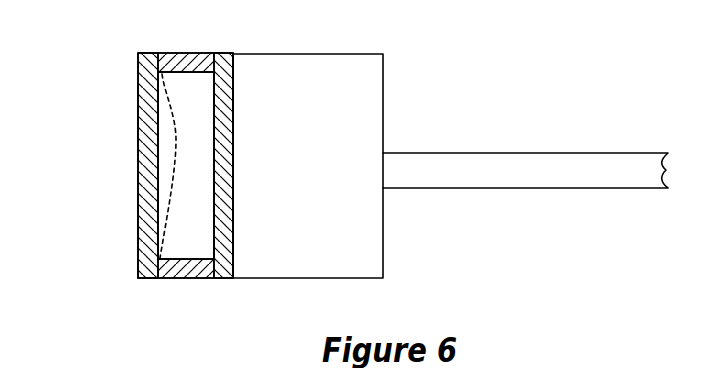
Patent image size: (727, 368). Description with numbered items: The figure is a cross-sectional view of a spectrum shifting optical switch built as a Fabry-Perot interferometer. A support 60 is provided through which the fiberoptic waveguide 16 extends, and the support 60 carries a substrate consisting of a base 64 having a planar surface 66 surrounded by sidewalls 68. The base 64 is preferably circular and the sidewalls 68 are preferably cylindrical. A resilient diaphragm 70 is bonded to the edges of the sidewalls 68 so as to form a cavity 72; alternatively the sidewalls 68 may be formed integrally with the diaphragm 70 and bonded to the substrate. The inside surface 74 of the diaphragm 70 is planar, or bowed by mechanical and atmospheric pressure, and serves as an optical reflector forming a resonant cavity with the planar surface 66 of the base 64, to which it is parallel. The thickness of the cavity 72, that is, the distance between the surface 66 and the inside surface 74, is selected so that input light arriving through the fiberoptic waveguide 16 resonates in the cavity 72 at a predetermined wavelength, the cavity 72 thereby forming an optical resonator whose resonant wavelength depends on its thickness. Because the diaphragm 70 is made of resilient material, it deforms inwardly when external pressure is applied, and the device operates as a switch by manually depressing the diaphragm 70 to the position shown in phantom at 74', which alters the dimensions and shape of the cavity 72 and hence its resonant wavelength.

The fiberoptic waveguide 16 is at (467, 153).
The support 60 is at (303, 277).
The base 64 is at (216, 110).
The planar surface 66 is at (213, 199).
The sidewalls 68 is at (190, 53).
The resilient diaphragm 70 is at (138, 185).
The cavity 72 is at (204, 158).
The inside surface of the diaphragm 74 is at (125, 165).
The depressed position of the diaphragm inside surface 74' is at (133, 166).